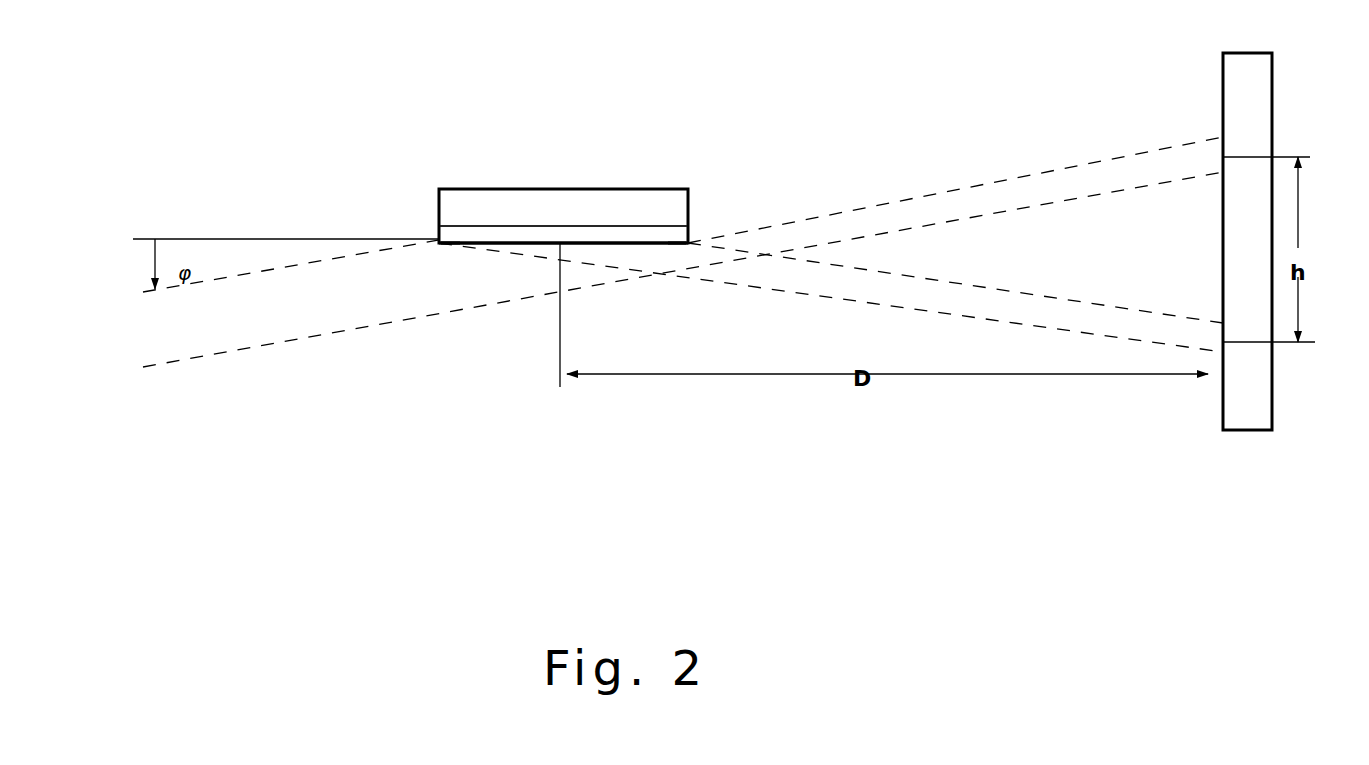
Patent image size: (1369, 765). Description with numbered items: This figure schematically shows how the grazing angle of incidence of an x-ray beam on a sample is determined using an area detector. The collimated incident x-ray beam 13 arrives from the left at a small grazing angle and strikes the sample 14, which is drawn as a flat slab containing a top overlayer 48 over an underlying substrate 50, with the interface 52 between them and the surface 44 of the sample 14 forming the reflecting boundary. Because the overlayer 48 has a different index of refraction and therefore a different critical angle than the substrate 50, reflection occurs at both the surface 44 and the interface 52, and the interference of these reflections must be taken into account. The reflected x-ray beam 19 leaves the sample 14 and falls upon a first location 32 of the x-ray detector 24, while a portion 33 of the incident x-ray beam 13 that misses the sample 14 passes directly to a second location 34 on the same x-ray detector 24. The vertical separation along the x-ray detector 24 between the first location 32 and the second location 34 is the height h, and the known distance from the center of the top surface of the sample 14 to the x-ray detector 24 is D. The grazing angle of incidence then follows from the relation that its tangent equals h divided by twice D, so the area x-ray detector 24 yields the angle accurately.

The incident x-ray beam 13 is at (188, 333).
The sample 14 is at (573, 186).
The reflected x-ray beam 19 is at (1004, 313).
The x-ray detector 24 is at (1232, 408).
The first location 32 is at (1220, 342).
The portion of the incident x-ray beam 33 is at (1055, 187).
The second location 34 is at (1220, 157).
The surface 44 is at (613, 243).
The overlayer 48 is at (440, 234).
The substrate 50 is at (642, 207).
The interface 52 is at (690, 227).